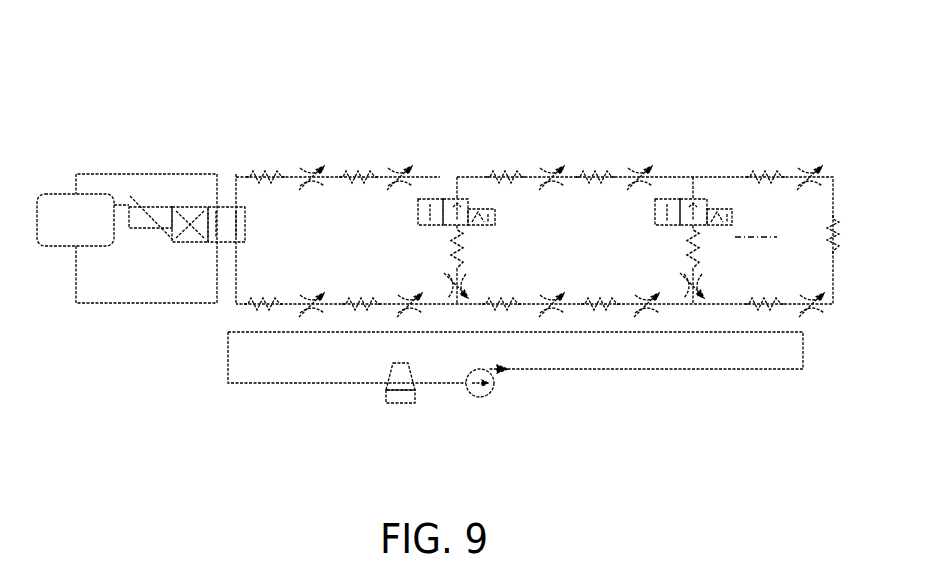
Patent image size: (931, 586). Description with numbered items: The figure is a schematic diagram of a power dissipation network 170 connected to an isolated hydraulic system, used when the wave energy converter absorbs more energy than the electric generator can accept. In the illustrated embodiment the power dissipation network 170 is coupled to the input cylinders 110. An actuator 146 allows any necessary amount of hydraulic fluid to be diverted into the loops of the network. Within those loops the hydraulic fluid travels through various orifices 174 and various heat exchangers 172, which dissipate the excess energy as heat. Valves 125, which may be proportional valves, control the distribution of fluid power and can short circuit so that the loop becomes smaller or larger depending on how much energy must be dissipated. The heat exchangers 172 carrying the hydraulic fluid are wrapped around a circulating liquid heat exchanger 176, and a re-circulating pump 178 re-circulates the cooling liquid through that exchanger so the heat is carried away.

The power dissipation network 170 is at (202, 93).
The input cylinders 110 is at (85, 205).
The actuator 146 is at (243, 230).
The heat exchangers 172 is at (302, 400).
The orifices 174 is at (644, 170).
The valves 125 is at (470, 226).
The circulating liquid heat exchanger 176 is at (403, 388).
The re-circulating pump 178 is at (490, 388).